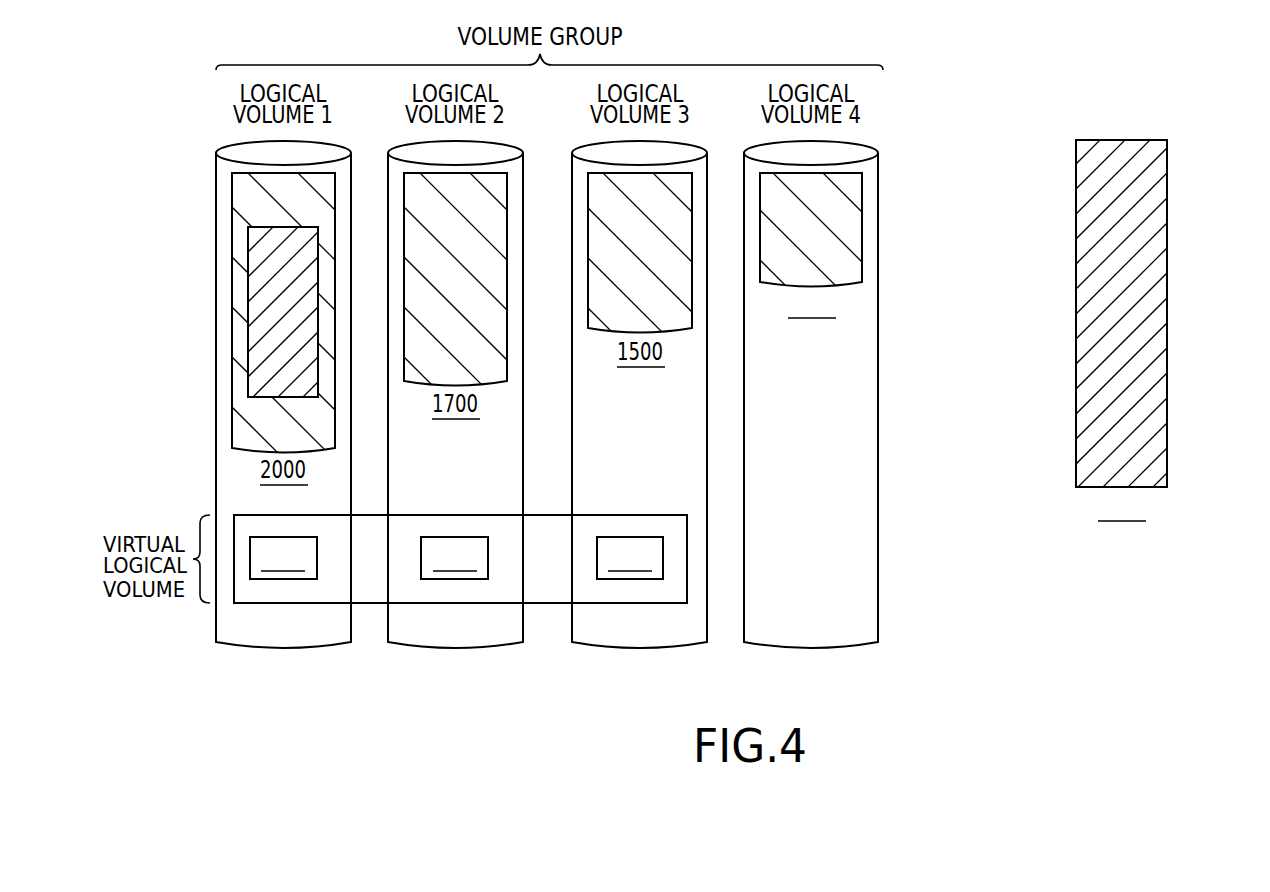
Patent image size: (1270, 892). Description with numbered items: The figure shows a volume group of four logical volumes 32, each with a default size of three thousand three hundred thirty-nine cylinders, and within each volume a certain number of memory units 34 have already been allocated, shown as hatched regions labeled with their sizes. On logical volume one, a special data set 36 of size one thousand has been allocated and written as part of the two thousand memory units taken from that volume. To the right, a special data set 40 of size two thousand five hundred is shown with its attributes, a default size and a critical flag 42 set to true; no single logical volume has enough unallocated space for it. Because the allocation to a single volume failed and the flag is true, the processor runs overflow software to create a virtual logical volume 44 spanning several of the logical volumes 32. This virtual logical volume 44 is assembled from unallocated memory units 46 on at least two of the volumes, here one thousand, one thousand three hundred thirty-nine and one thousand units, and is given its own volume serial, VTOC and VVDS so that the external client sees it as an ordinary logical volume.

The logical volume 32 is at (858, 374).
The memory units 34 is at (868, 262).
The special data set 36 is at (262, 358).
The special data set 40 is at (1175, 383).
The flag 42 is at (1210, 113).
The virtual logical volume 44 is at (460, 599).
The unallocated memory units 46 is at (624, 593).